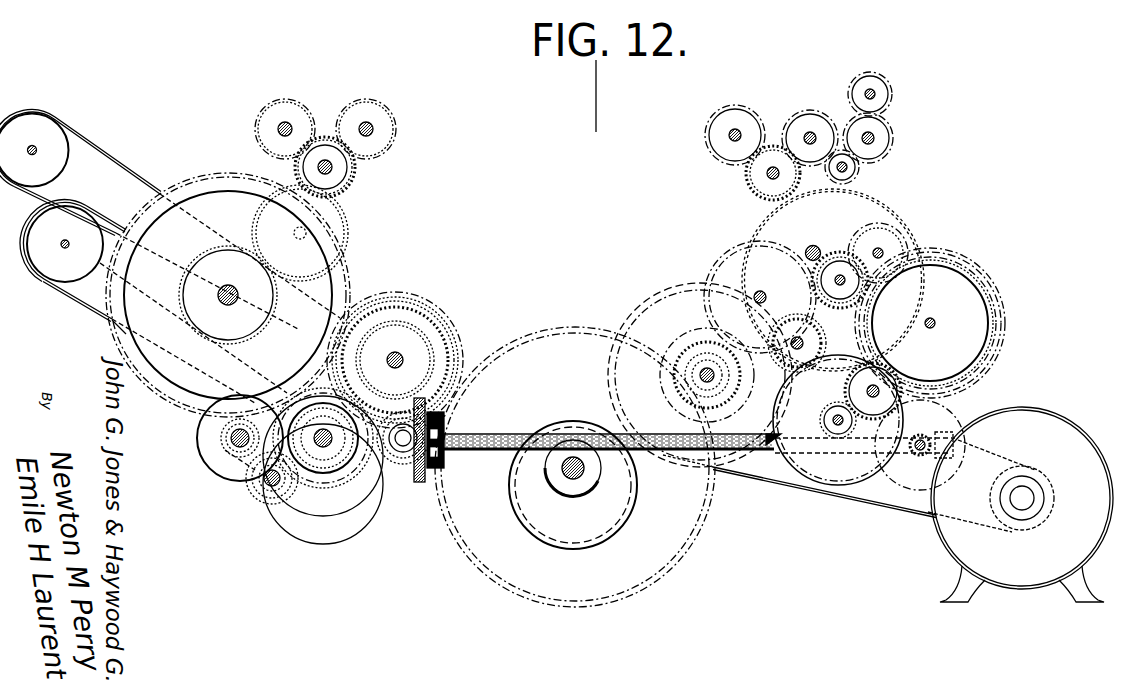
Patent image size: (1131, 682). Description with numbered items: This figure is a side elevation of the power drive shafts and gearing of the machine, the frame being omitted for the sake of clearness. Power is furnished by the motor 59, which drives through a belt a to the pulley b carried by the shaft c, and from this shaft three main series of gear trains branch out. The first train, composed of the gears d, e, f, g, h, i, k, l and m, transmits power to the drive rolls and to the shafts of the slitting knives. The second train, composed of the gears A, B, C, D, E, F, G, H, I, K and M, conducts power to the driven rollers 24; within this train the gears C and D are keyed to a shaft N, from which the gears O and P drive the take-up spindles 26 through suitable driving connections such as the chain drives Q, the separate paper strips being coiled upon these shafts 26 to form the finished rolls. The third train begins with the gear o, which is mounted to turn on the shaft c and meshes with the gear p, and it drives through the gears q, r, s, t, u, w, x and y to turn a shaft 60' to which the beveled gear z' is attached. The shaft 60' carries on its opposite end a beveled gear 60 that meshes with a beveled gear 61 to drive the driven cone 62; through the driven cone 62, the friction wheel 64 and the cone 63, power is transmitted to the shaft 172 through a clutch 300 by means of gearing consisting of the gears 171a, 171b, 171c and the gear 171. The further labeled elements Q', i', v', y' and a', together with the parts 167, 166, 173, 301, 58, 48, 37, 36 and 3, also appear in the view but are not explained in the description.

The take-up spindle shaft 26 is at (51, 199).
The chain drive Q is at (214, 323).
The belt Q' is at (137, 301).
The belt 167 is at (123, 333).
The gear F is at (236, 262).
The gear E is at (348, 276).
The shaft 166 is at (224, 310).
The gear G is at (338, 223).
The gear M is at (258, 116).
The driven roller 24 is at (300, 117).
The gear K is at (404, 118).
The gear I is at (352, 168).
The gear H is at (340, 188).
The gear D is at (430, 308).
The gear C is at (456, 326).
The gear O is at (458, 346).
The shaft N is at (399, 358).
The cone 63 is at (206, 445).
The pulley 173 is at (238, 418).
The gear 171a is at (222, 470).
The gear 171b is at (255, 490).
The gear 171c is at (270, 508).
The shaft 301 is at (290, 498).
The clutch 300 is at (283, 530).
The shaft 172 is at (318, 456).
The friction wheel 64 is at (318, 492).
The driven cone 62 is at (378, 475).
The gear 171 is at (348, 520).
The beveled gear 60 is at (438, 458).
The beveled gear 61 is at (428, 482).
The gear 58 is at (440, 485).
The gear P is at (440, 403).
The shaft 60' is at (612, 420).
The gear B is at (580, 328).
The wheel 48 is at (575, 467).
The hub 37 is at (610, 502).
The shaft 36 is at (586, 468).
The gear A is at (662, 312).
The pulley b is at (640, 318).
The shaft c is at (692, 375).
The gear d is at (700, 345).
The gear o is at (690, 402).
The gear p is at (722, 272).
The gear e is at (752, 290).
The gear g is at (762, 214).
The gear h is at (765, 196).
The gear i' is at (718, 135).
The gear i is at (810, 122).
The gear m is at (880, 92).
The gear l is at (880, 133).
The gear k is at (852, 172).
The gear q is at (842, 262).
The gear s is at (900, 245).
The gear r is at (872, 323).
The gear t is at (968, 278).
The gear u is at (1003, 305).
The gear f is at (812, 342).
The gear v' is at (859, 391).
The gear x is at (838, 420).
The gear w is at (830, 410).
The gear y is at (931, 436).
The beveled gear z' is at (953, 459).
The gear 3 is at (915, 455).
The shaft y' is at (908, 489).
The belt a' is at (809, 478).
The belt a is at (991, 474).
The motor 59 is at (1047, 452).